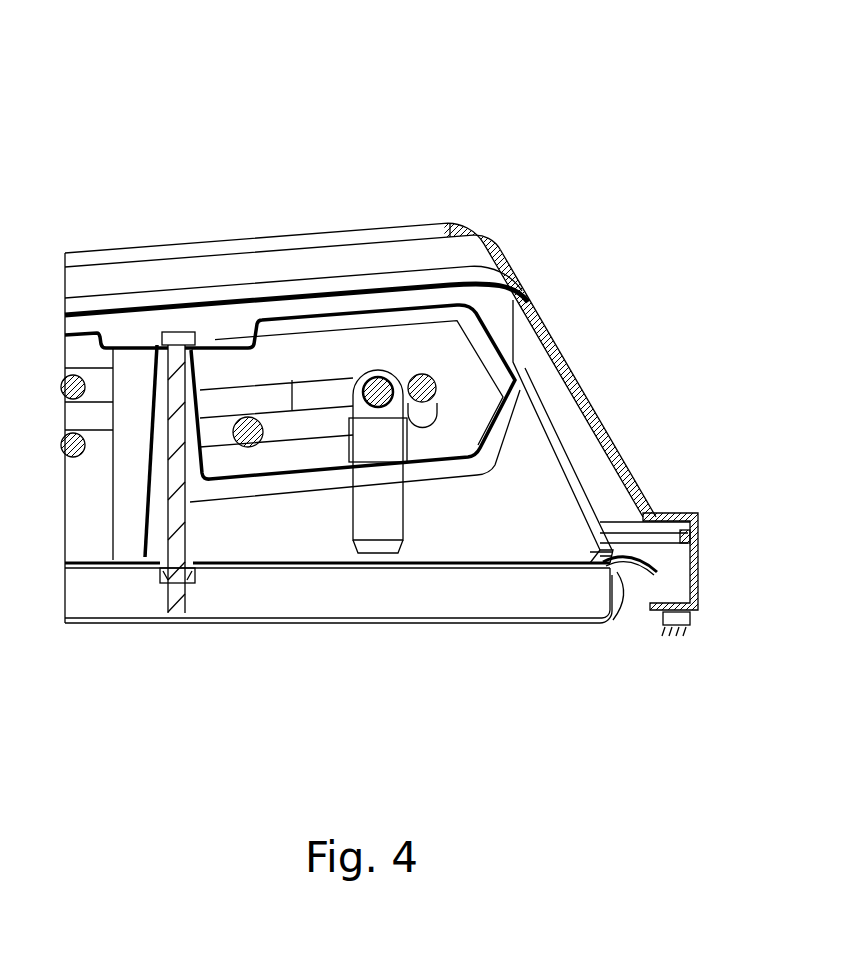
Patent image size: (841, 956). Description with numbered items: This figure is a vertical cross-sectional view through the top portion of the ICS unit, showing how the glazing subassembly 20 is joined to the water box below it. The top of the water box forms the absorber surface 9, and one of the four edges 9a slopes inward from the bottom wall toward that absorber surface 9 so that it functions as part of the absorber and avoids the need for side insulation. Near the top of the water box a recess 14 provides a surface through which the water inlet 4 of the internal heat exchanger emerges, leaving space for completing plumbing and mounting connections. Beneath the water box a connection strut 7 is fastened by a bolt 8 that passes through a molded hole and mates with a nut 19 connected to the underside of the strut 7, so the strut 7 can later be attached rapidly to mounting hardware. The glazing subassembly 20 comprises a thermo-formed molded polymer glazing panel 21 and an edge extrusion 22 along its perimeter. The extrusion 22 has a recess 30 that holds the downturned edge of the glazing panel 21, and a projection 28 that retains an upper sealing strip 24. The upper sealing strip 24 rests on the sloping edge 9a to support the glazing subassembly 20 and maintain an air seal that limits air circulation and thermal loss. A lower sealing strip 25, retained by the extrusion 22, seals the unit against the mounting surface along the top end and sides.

The glazing subassembly 20 is at (280, 247).
The glazing panel 21 is at (360, 275).
The absorber surface 9 is at (362, 308).
The recess 14 is at (532, 476).
The water inlet 4 is at (388, 520).
The nut 19 is at (187, 617).
The bolt 8 is at (183, 587).
The connection strut 7 is at (343, 602).
The edge 9a is at (610, 565).
The edge extrusion 22 is at (673, 513).
The recess 30 is at (697, 515).
The projection 28 is at (703, 560).
The upper sealing strip 24 is at (658, 606).
The lower sealing strip 25 is at (662, 648).